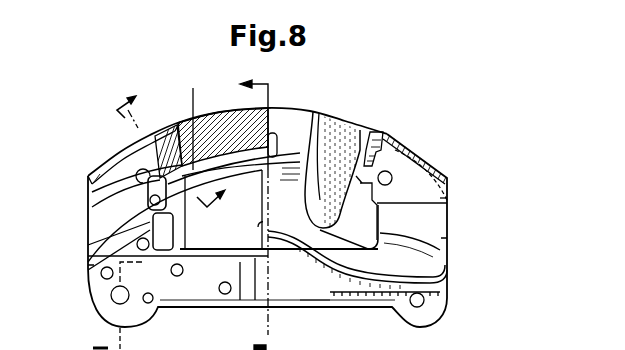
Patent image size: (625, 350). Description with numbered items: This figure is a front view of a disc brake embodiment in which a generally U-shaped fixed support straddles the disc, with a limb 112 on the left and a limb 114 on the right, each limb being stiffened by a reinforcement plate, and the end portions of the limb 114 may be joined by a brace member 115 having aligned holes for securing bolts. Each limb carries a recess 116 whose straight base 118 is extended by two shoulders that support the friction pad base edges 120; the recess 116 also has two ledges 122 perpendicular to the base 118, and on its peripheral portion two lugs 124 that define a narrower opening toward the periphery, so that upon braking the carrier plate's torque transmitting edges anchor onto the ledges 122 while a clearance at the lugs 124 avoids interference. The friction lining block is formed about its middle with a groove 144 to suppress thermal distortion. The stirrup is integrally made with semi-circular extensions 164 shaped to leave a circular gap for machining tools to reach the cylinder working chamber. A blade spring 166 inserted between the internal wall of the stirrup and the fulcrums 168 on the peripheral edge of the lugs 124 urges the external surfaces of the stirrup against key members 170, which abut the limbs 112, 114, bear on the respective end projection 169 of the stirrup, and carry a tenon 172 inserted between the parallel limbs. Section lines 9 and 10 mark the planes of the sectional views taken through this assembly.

The section line 9- 9 is at (188, 212).
The section line 10- 10 is at (180, 147).
The limb 112 is at (98, 162).
The limb 114 is at (402, 158).
The brace member 115 is at (311, 290).
The recess 116 is at (209, 122).
The straight base 118 is at (240, 262).
The friction pad base edges 120 is at (367, 255).
The ledges 122 is at (447, 240).
The lugs 124 is at (447, 200).
The groove 144 is at (255, 270).
The semi-circular extensions 164 is at (318, 118).
The blade spring 166 is at (130, 165).
The fulcrums 168 is at (384, 140).
The end projection 169 is at (181, 192).
The key members 170 is at (165, 140).
The tenon 172 is at (371, 125).